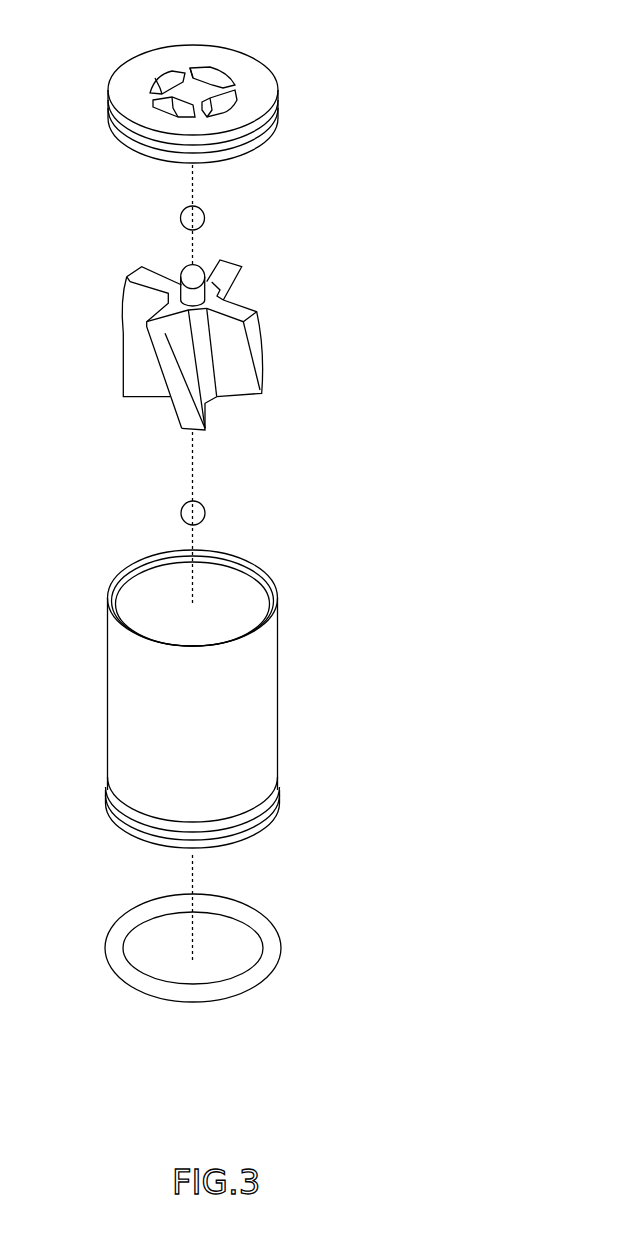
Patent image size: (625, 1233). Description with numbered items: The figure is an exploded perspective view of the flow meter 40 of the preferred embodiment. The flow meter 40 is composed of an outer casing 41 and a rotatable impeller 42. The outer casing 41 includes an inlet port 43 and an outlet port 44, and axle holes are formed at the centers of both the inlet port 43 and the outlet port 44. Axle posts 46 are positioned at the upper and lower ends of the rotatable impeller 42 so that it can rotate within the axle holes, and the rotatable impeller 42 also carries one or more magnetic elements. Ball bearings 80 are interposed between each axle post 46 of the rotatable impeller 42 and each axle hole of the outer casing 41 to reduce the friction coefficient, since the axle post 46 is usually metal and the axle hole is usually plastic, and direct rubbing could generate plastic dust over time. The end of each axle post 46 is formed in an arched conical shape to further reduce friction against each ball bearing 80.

The flow meter 40 is at (413, 390).
The outer casing 41 is at (291, 583).
The rotatable impeller 42 is at (227, 344).
The inlet port 43 is at (253, 837).
The outlet port 44 is at (215, 78).
The axle post 46 is at (218, 290).
The ball bearing 80 is at (205, 217).